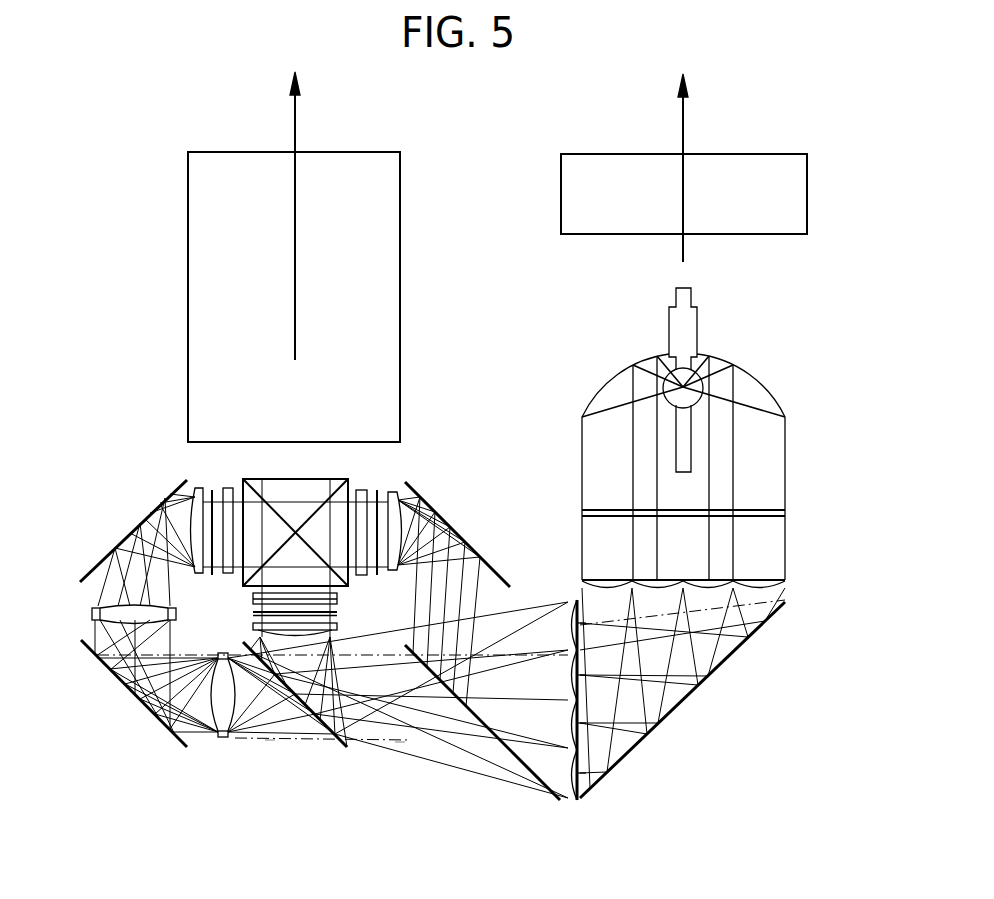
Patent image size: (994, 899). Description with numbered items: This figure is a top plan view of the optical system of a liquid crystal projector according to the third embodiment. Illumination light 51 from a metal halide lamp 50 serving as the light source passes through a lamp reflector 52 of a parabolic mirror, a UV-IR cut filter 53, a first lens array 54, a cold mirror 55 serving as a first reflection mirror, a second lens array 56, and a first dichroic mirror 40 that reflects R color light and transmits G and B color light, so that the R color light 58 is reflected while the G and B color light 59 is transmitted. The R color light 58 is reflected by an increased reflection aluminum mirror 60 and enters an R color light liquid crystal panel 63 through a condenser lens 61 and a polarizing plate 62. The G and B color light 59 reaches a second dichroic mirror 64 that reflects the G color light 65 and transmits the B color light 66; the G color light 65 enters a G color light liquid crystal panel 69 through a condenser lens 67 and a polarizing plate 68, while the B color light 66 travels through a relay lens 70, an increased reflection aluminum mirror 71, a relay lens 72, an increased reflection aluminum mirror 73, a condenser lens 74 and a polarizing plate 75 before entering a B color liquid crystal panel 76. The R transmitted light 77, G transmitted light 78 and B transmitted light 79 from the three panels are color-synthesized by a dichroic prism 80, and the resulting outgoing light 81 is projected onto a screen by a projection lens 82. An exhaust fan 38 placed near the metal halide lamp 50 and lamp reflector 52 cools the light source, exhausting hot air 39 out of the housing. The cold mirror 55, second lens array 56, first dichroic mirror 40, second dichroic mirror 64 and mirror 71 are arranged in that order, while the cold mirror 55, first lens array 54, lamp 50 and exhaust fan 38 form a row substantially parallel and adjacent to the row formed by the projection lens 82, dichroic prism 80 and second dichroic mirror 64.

The exhaust fan 38 is at (808, 190).
The hot air 39 is at (686, 127).
The first dichroic mirror 40 is at (553, 800).
The metal halide lamp 50 is at (710, 356).
The illumination light 51 is at (648, 362).
The lamp reflector 52 is at (772, 397).
The UV-IR cut filter 53 is at (610, 507).
The first lens array 54 is at (790, 580).
The cold mirror 55 is at (692, 694).
The second lens array 56 is at (575, 805).
The R color light 58 is at (508, 604).
The G and B color light 59 is at (400, 744).
The increased reflection aluminum mirror 60 is at (460, 537).
The condenser lens 61 is at (398, 492).
The polarizing plate 62 is at (379, 490).
The R color light liquid crystal panel 63 is at (364, 490).
The second dichroic mirror 64 is at (342, 752).
The G color light 65 is at (340, 633).
The B color light 66 is at (270, 740).
The condenser lens 67 is at (340, 614).
The polarizing plate 68 is at (252, 616).
The G color light liquid crystal panel 69 is at (340, 598).
The relay lens 70 is at (220, 742).
The increased reflection aluminum mirror 71 is at (130, 697).
The relay lens 72 is at (92, 612).
The increased reflection aluminum mirror 73 is at (128, 524).
The condenser lens 74 is at (192, 490).
The polarizing plate 75 is at (211, 490).
The B color liquid crystal panel 76 is at (228, 488).
The R transmitted light 77 is at (350, 488).
The G transmitted light 78 is at (252, 597).
The B transmitted light 79 is at (243, 485).
The dichroic prism 80 is at (272, 480).
The outgoing light 81 is at (298, 126).
The projection lens 82 is at (188, 215).